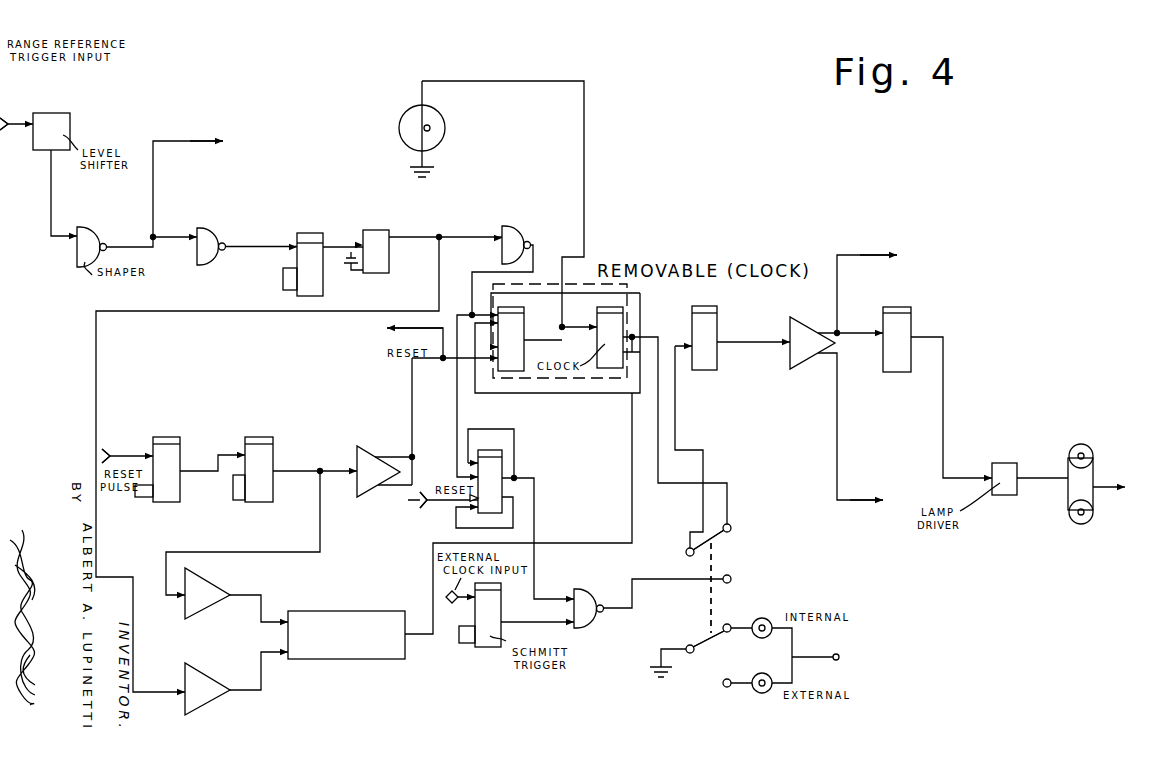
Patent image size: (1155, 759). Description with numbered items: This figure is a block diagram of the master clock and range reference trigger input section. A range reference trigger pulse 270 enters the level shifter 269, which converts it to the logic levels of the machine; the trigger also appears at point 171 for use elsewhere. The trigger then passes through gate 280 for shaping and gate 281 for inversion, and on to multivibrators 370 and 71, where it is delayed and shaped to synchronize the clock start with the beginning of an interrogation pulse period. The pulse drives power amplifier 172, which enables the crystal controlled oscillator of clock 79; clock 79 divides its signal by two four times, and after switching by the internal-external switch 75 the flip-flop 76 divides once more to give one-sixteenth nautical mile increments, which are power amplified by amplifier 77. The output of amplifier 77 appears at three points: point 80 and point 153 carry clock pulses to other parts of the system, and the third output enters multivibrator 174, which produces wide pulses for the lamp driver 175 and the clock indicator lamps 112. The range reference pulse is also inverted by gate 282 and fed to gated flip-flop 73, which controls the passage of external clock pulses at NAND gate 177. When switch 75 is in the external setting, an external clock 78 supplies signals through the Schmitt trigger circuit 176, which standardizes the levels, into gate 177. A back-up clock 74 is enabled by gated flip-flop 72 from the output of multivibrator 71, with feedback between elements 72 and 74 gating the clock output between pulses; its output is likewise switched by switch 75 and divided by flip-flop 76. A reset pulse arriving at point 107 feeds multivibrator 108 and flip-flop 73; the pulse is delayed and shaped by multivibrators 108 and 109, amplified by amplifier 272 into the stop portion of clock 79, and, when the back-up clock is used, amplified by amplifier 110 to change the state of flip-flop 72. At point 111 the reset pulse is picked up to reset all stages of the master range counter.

The range reference trigger pulse 270 is at (15, 122).
The level shifter 269 is at (72, 98).
The shaping gate 280 is at (87, 228).
The range reference trigger point 171 is at (206, 120).
The inversion gate 281 is at (205, 233).
The multivibrator 370 is at (308, 233).
The multivibrator 71 is at (395, 212).
The inversion gate 282 is at (512, 232).
The gated flip-flop 72 is at (516, 320).
The back-up clock 74 is at (606, 322).
The gated flip-flop 73 is at (495, 461).
The flip-flop 76 is at (700, 313).
The power amplifier 77 is at (818, 310).
The clock output point 80 is at (876, 240).
The multivibrator 174 is at (900, 310).
The clock output point 153 is at (866, 498).
The lamp driver 175 is at (1026, 448).
The clock indicator lamps 112 is at (1092, 470).
The internal-external switch 75 is at (712, 568).
The NAND gate 177 is at (586, 600).
The Schmitt trigger circuit 176 is at (490, 608).
The external clock 78 is at (451, 604).
The clock 79 is at (375, 620).
The amplifier 272 is at (199, 600).
The power amplifier 172 is at (198, 680).
The reset pulse point 107 is at (137, 440).
The multivibrator 108 is at (166, 446).
The multivibrator 109 is at (262, 446).
The amplifier 110 is at (370, 451).
The reset output point 111 is at (408, 328).